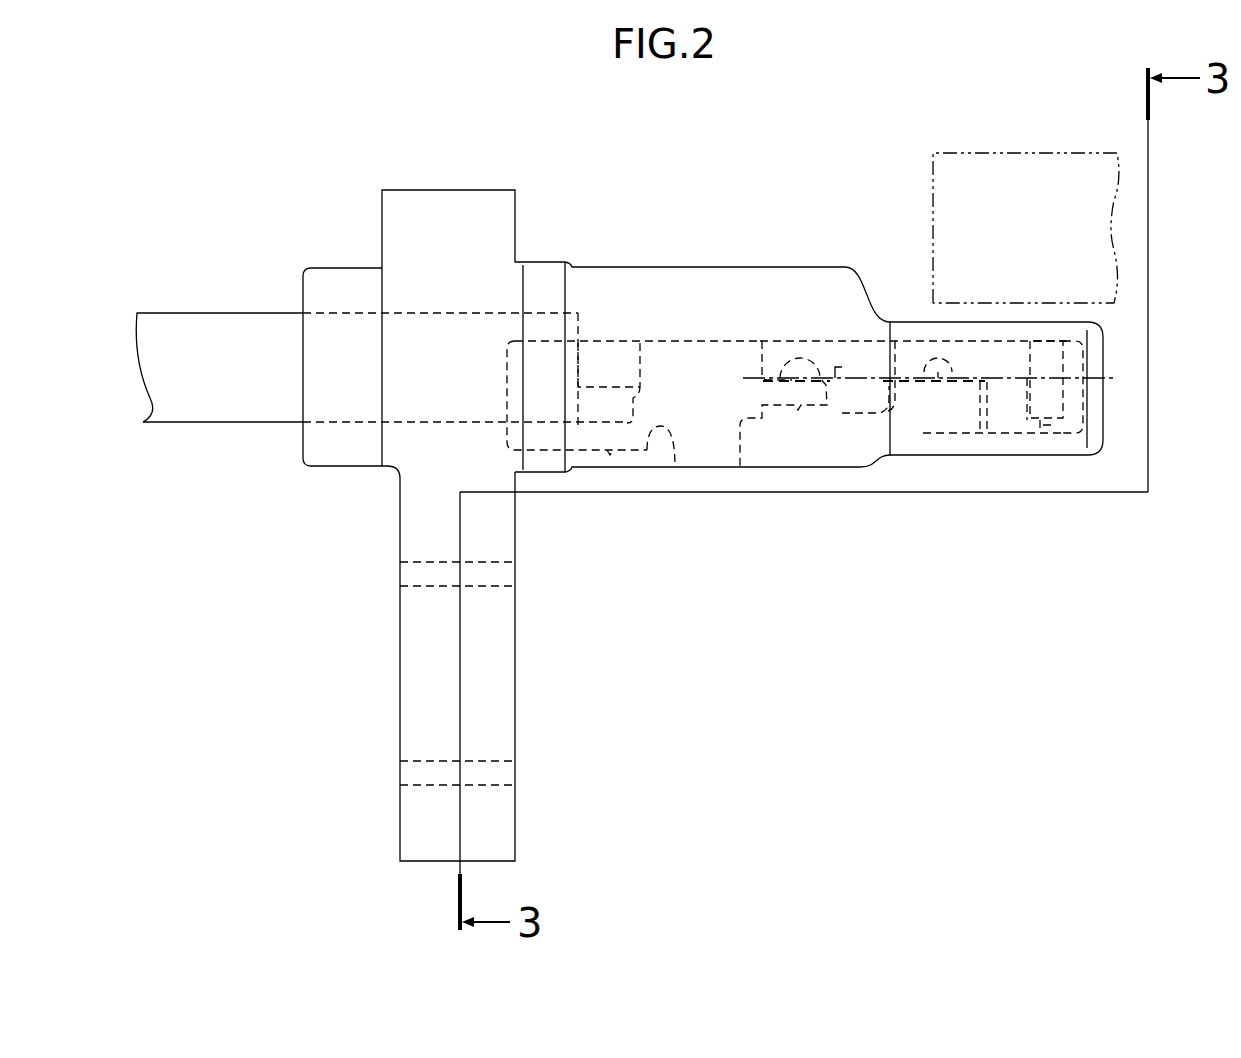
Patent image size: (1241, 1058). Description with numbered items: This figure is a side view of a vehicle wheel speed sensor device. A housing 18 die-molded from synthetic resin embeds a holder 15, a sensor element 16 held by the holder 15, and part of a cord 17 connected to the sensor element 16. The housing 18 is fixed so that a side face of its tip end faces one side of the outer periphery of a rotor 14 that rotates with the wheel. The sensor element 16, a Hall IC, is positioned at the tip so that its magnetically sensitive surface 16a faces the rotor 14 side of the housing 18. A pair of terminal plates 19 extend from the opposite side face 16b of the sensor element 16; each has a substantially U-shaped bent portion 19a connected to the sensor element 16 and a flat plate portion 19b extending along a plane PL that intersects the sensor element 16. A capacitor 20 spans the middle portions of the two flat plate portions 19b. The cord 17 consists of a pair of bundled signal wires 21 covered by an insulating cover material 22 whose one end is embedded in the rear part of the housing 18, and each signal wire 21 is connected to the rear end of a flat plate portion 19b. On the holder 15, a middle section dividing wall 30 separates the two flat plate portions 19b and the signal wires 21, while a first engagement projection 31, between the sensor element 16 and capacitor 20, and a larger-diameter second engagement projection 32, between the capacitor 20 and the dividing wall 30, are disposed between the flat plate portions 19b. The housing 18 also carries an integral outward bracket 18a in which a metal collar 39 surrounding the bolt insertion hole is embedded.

The rotor 14 is at (988, 142).
The holder 15 is at (775, 330).
The sensor element 16 is at (1090, 400).
The magnetically sensitive surface 16a is at (1043, 341).
The side face 16b is at (1052, 428).
The cord 17 is at (247, 306).
The housing 18 is at (622, 275).
The bracket 18a is at (399, 837).
The terminal plates 19 is at (990, 445).
The bent portions 19a is at (997, 440).
The flat plate portions 19b is at (896, 341).
The capacitor 20 is at (875, 415).
The signal wires 21 is at (597, 353).
The insulating cover material 22 is at (197, 315).
The middle section dividing wall 30 is at (697, 340).
The first engagement projection 31 is at (940, 360).
The second engagement projection 32 is at (797, 363).
The collar 39 is at (482, 790).
The plane PL is at (1022, 375).